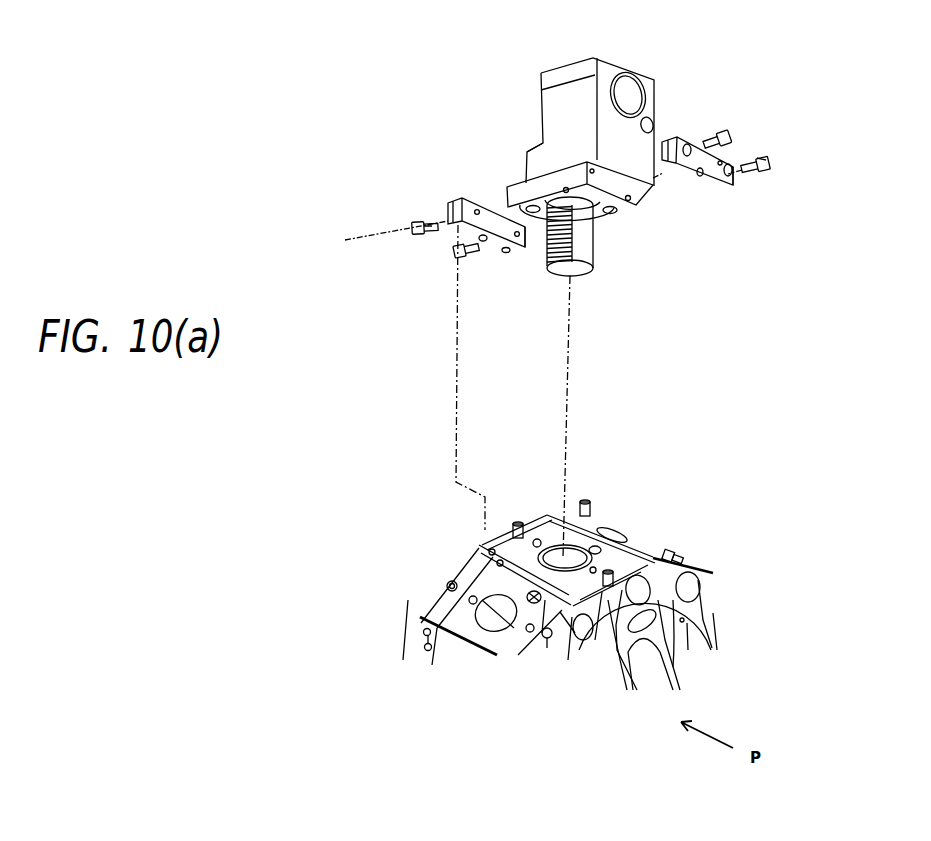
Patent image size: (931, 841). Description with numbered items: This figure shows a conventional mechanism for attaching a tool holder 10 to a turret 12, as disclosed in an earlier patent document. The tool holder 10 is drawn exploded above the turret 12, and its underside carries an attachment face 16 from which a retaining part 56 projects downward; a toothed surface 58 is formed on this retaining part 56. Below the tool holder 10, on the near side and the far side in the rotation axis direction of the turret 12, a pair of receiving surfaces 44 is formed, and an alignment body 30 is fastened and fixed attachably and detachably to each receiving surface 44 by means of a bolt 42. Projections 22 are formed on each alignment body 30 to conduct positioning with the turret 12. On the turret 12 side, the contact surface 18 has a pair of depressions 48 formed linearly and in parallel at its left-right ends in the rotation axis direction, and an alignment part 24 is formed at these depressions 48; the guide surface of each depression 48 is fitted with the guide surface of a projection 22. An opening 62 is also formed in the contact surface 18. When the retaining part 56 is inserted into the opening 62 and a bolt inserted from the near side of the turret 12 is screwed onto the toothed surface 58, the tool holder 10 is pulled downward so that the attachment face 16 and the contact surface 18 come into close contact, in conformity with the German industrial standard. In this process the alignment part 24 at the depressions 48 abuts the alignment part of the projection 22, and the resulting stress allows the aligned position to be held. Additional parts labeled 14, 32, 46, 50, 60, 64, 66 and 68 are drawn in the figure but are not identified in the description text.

The tool holder 10 is at (650, 92).
The turret 12 is at (707, 603).
The axis 14 is at (568, 385).
The attachment face 16 is at (523, 173).
The contact surface 18 is at (514, 524).
The projections 22 is at (447, 221).
The alignment part 24 is at (557, 515).
The alignment body 30 is at (461, 198).
The bolt shanks 32 is at (430, 221).
The bolt 42 is at (813, 168).
The receiving surfaces 44 is at (485, 200).
The flange holes 46 is at (588, 172).
The depressions 48 is at (512, 603).
The fastening holes 50 is at (452, 585).
The retaining part 56 is at (588, 272).
The toothed surface 58 is at (552, 273).
The legs 60 is at (700, 582).
The opening 62 is at (637, 520).
The large bore 64 is at (631, 93).
The countersunk holes 66 is at (487, 243).
The fastener 68 is at (537, 541).